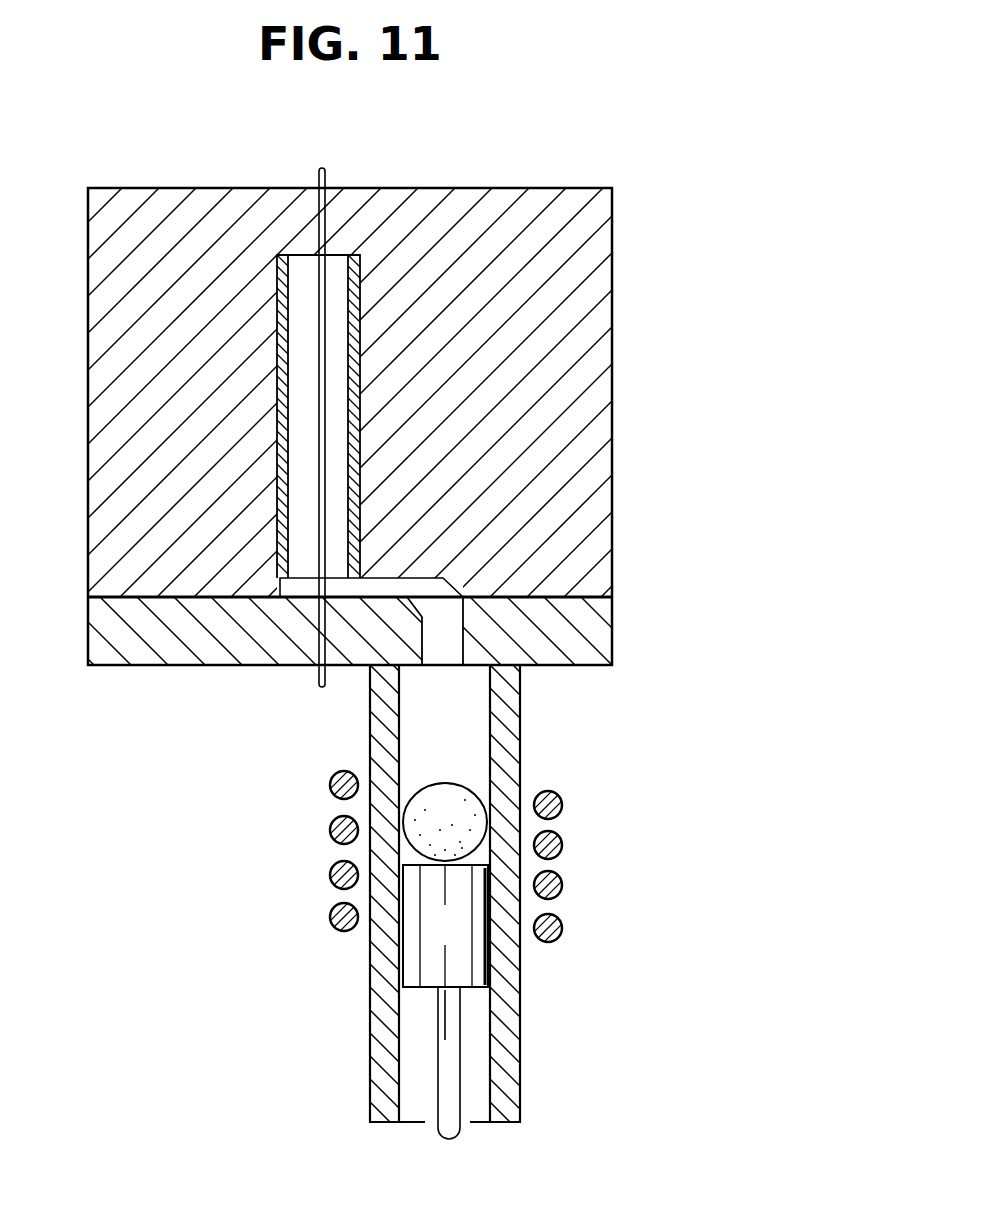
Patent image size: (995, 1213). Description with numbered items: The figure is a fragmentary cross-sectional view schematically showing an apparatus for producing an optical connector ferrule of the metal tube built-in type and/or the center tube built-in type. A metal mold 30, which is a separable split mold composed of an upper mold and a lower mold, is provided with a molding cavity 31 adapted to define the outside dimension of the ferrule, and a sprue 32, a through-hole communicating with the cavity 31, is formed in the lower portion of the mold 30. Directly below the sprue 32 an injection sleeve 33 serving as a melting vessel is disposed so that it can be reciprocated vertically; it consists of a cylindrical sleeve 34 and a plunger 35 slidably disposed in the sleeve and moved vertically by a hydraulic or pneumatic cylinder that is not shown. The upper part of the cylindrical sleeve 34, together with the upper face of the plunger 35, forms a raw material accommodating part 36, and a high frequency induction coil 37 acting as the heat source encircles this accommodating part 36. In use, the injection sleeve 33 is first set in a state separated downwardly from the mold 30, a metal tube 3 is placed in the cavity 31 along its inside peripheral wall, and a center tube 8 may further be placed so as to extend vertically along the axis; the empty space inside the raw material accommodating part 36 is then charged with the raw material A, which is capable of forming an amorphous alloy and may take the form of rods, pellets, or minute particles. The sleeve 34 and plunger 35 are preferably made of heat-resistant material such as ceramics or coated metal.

The metal tube 3 is at (363, 360).
The center tube 8 is at (325, 170).
The metal mold 30 is at (613, 428).
The molding cavity 31 is at (342, 268).
The sprue 32 is at (452, 638).
The injection sleeve 33 is at (474, 898).
The cylindrical sleeve 34 is at (372, 1047).
The plunger 35 is at (493, 952).
The raw material accommodating part 36 is at (468, 772).
The high frequency induction coil 37 is at (563, 885).
The raw material A is at (432, 785).